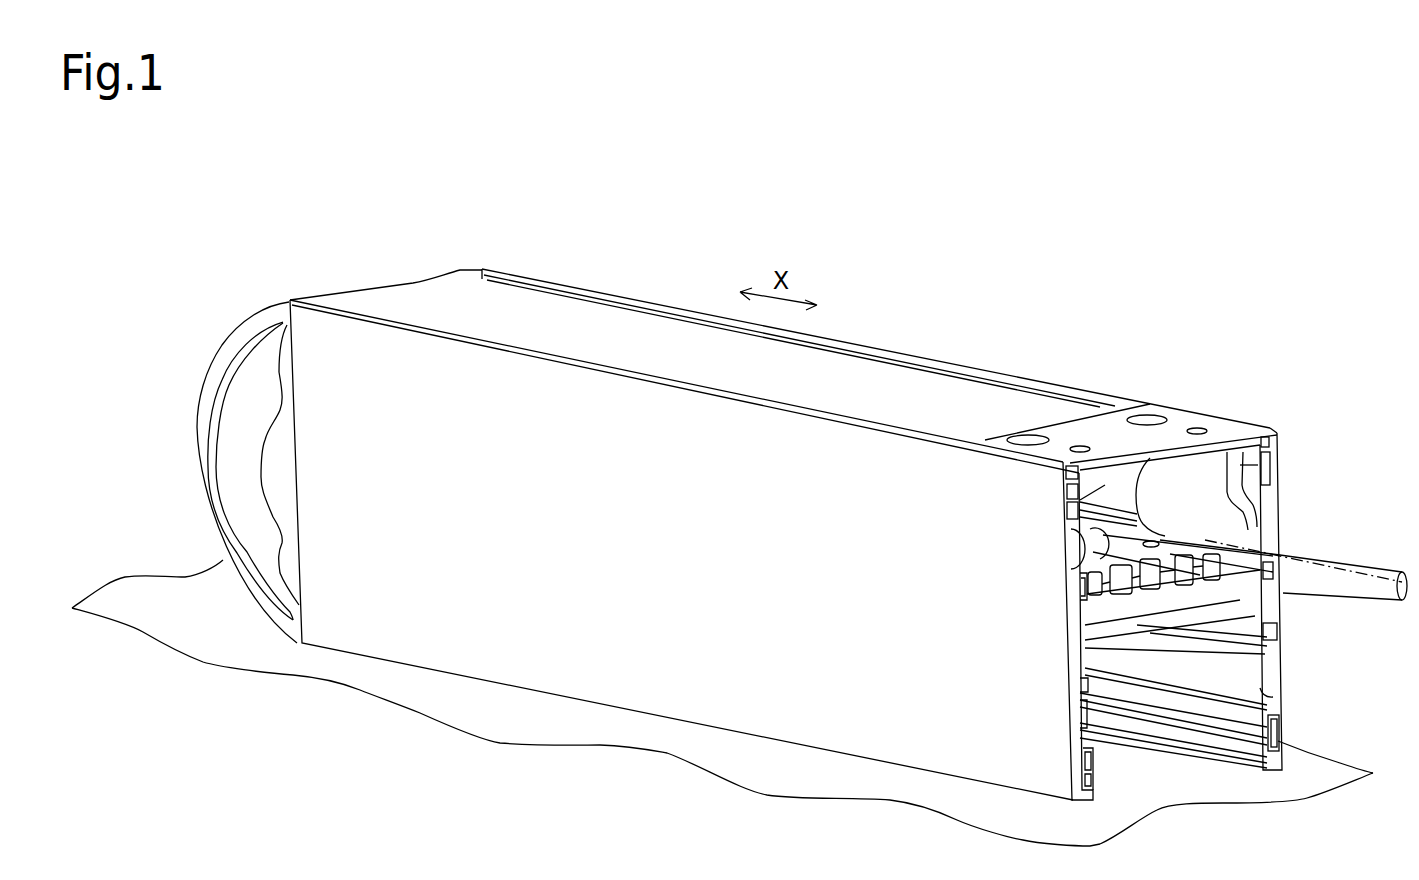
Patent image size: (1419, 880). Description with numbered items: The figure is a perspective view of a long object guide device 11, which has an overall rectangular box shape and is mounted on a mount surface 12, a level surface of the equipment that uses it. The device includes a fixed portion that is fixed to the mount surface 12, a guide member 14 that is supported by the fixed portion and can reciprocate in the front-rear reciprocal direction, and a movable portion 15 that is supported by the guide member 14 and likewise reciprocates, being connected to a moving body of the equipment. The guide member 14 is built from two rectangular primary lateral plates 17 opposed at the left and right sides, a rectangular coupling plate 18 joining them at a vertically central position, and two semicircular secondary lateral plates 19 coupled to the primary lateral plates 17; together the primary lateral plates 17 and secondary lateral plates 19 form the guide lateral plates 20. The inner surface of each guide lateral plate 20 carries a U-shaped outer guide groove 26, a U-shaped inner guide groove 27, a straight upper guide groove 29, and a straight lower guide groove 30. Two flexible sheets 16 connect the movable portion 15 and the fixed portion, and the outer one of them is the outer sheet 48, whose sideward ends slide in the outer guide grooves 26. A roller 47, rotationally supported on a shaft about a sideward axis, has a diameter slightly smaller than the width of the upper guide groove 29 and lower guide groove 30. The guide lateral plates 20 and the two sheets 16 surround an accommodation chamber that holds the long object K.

The long object guide device 11 is at (1139, 233).
The mount surface 12 is at (803, 782).
The guide member 14 is at (630, 290).
The movable portion 15 is at (1093, 430).
The sheets 16 is at (875, 380).
The primary lateral plates 17 is at (352, 310).
The coupling plate 18 is at (1275, 638).
The secondary lateral plates 19 is at (237, 314).
The guide lateral plates 20 is at (315, 215).
The outer guide groove 26 is at (1265, 444).
The inner guide groove 27 is at (1267, 557).
The upper guide groove 29 is at (1070, 512).
The lower guide groove 30 is at (1080, 716).
The roller 47 is at (1270, 513).
The outer sheet 48 is at (876, 379).
The long object K is at (1350, 598).